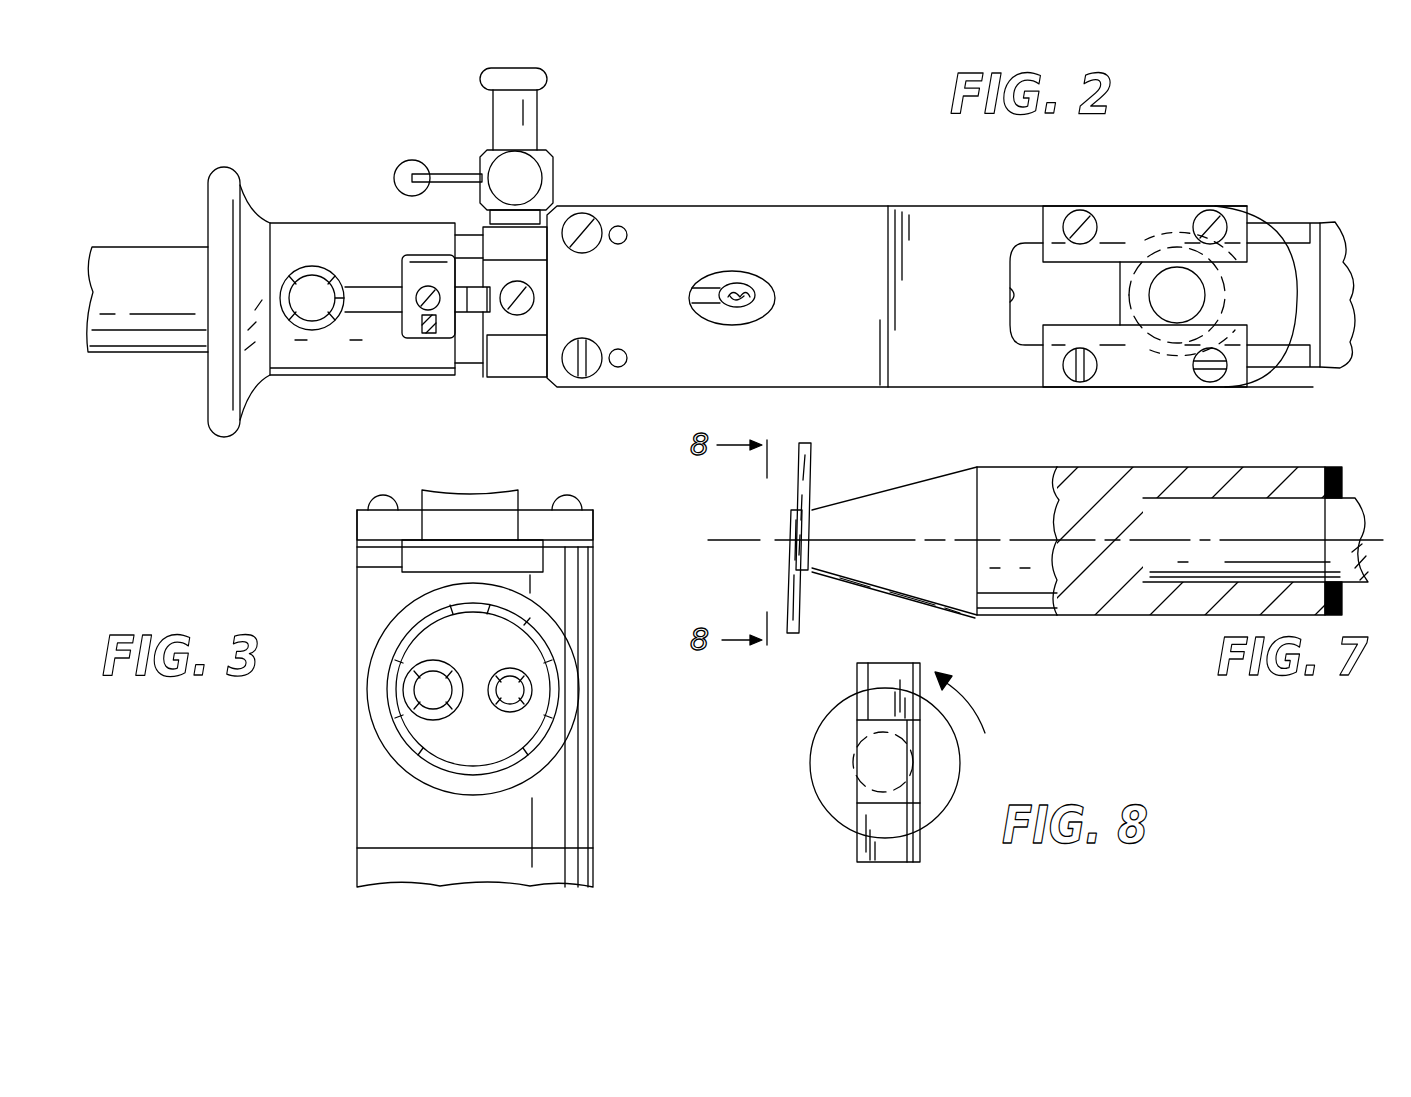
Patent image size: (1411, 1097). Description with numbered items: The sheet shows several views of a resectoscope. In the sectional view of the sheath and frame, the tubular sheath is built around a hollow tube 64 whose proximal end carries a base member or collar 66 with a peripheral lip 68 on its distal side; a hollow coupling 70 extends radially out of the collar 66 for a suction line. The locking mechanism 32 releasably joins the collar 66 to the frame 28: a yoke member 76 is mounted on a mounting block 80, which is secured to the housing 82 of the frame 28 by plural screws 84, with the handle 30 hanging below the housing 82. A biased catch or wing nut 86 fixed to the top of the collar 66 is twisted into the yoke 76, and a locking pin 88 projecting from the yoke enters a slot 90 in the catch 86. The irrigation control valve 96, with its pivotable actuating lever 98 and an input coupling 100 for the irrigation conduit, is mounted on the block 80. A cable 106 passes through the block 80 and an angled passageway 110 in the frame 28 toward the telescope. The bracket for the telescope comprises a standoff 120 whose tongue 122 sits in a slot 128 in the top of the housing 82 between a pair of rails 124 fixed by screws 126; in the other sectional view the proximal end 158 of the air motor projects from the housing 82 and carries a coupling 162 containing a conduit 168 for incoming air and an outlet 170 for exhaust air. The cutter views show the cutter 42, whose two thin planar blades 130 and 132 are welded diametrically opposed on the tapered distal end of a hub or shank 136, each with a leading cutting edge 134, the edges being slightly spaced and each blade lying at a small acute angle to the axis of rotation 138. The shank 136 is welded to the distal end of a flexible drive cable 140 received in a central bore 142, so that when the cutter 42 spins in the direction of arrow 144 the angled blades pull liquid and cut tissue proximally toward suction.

In FIG. 2, the frame 28 is at (700, 232).
In FIG. 2, the handle 30 is at (1273, 347).
In FIG. 3, the handle 30 is at (572, 752).
In FIG. 2, the locking mechanism 32 is at (513, 345).
In FIG. 7, the cutter member 42 is at (1020, 585).
In FIG. 8, the cutter member 42 is at (866, 785).
In FIG. 2, the hollow tube 64 is at (173, 330).
In FIG. 2, the base member or collar 66 is at (283, 368).
In FIG. 2, the peripheral lip 68 is at (233, 178).
In FIG. 2, the coupling 70 is at (318, 275).
In FIG. 2, the yoke member 76 is at (472, 320).
In FIG. 2, the mounting block 80 is at (530, 360).
In FIG. 2, the housing 82 is at (1140, 390).
In FIG. 2, the screws 84 is at (585, 215).
In FIG. 2, the catch or wing nut 86 is at (300, 357).
In FIG. 2, the locking pin 88 is at (422, 335).
In FIG. 2, the slot 90 is at (410, 320).
In FIG. 2, the control valve 96 is at (548, 160).
In FIG. 2, the actuating lever 98 is at (447, 168).
In FIG. 2, the coupling 100 is at (545, 75).
In FIG. 2, the cable 106 is at (715, 305).
In FIG. 2, the angled passageway 110 is at (757, 283).
In FIG. 3, the standoff 120 is at (510, 493).
In FIG. 2, the tongue 122 is at (1175, 250).
In FIG. 3, the tongue 122 is at (530, 563).
In FIG. 2, the rails 124 is at (1155, 175).
In FIG. 3, the rails 124 is at (365, 525).
In FIG. 2, the screws 126 is at (1078, 212).
In FIG. 3, the screws 126 is at (380, 500).
In FIG. 2, the slot 128 is at (1013, 293).
In FIG. 3, the slot 128 is at (400, 565).
In FIG. 7, the blade 130 is at (790, 585).
In FIG. 7, the blade 132 is at (812, 485).
In FIG. 7, the leading cutting edge 134 is at (808, 470).
In FIG. 8, the leading cutting edge 134 is at (857, 682).
In FIG. 7, the hub or shank 136 is at (1098, 615).
In FIG. 8, the hub or shank 136 is at (958, 750).
In FIG. 7, the axis of rotation 138 is at (740, 540).
In FIG. 8, the axis of rotation 138 is at (867, 765).
In FIG. 7, the flexible drive cable 140 is at (1350, 510).
In FIG. 7, the central bore 142 is at (1218, 508).
In FIG. 8, the arrow 144 is at (973, 705).
In FIG. 3, the proximal end of air motor 158 is at (570, 700).
In FIG. 3, the coupling 162 is at (550, 668).
In FIG. 3, the conduit 168 is at (420, 708).
In FIG. 3, the outlet 170 is at (505, 712).